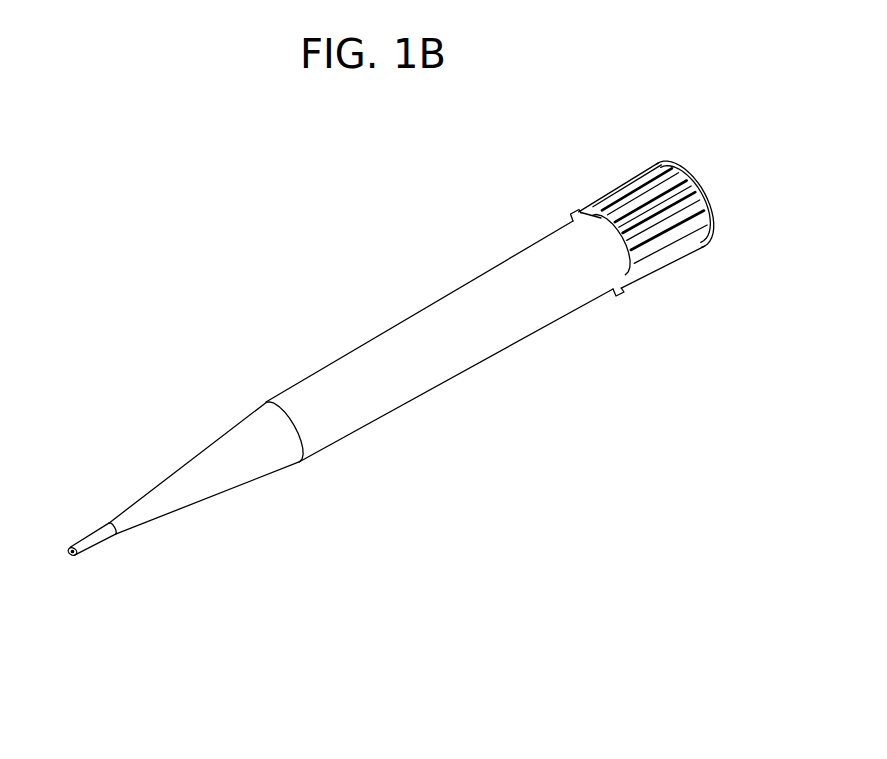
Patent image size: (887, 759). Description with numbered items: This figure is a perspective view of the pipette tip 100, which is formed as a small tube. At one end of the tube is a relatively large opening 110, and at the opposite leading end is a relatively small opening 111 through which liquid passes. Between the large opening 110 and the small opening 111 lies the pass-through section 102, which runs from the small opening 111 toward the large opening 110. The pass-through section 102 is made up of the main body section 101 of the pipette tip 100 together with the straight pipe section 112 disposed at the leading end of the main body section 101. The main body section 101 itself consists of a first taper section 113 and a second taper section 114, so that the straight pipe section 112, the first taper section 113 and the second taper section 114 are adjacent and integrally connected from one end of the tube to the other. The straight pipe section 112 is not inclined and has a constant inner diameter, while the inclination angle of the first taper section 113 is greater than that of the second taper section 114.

The pipette tip 100 is at (147, 411).
The main body section 101 is at (585, 437).
The pass-through section 102 is at (533, 545).
The large opening 110 is at (676, 234).
The small opening 111 is at (67, 560).
The straight pipe section 112 is at (100, 538).
The first taper section 113 is at (235, 473).
The second taper section 114 is at (423, 372).